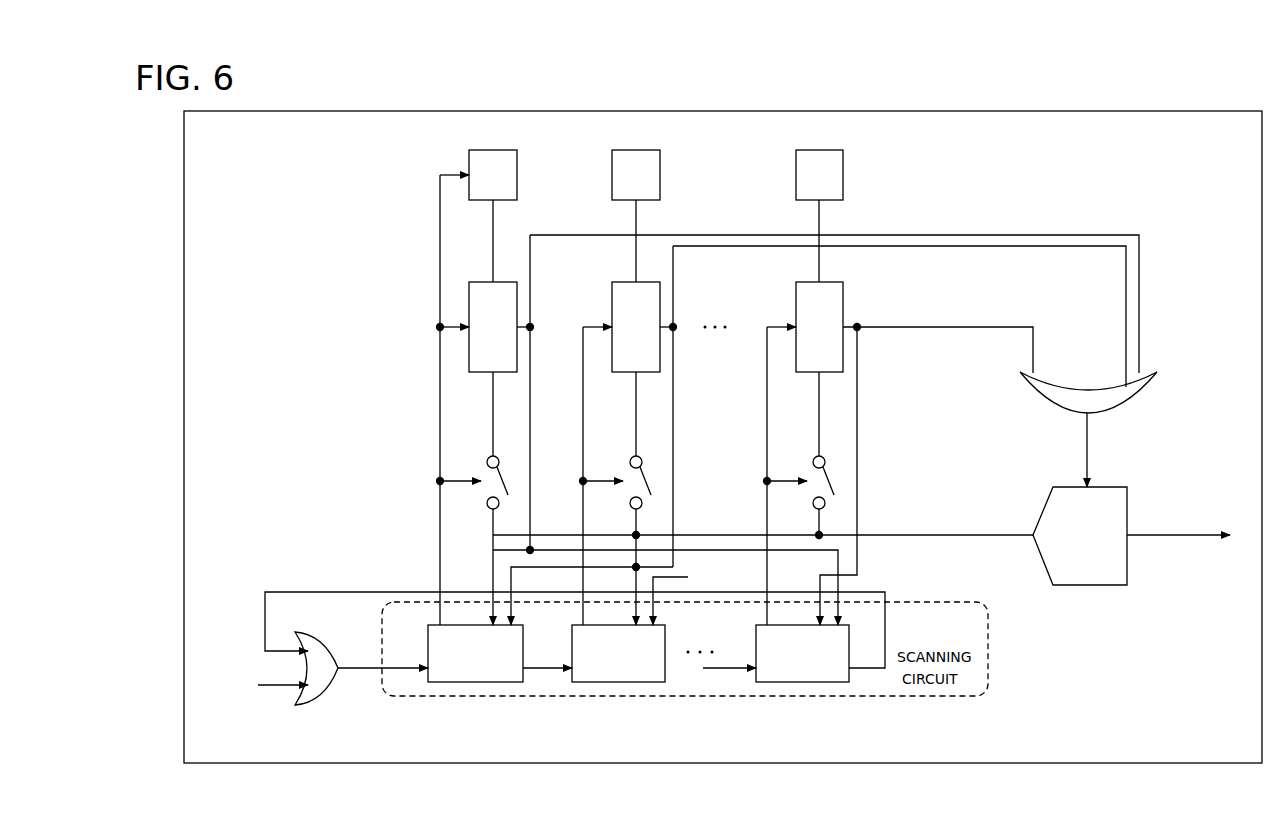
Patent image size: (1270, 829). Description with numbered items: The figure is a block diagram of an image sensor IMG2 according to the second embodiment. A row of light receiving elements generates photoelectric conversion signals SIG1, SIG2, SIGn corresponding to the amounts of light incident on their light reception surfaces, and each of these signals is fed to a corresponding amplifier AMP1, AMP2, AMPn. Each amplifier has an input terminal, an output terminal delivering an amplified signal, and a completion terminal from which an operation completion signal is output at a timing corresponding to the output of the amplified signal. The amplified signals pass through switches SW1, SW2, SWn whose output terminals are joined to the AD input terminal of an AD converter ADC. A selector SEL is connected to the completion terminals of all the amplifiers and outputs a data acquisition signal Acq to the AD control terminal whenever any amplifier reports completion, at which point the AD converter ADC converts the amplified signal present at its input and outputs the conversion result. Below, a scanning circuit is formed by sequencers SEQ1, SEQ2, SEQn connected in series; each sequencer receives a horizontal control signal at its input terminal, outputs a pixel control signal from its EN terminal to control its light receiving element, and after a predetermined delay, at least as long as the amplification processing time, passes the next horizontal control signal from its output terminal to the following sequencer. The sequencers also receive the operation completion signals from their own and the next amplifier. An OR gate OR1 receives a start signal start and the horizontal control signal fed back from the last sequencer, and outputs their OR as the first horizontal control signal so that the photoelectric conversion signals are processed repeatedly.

The image sensor IMG2 is at (1137, 111).
The first photoelectric conversion signal SIG1 is at (494, 213).
The second photoelectric conversion signal SIG2 is at (637, 213).
The n-th photoelectric conversion signal SIGn is at (820, 213).
The first amplifier AMP1 is at (485, 282).
The second amplifier AMP2 is at (627, 282).
The n-th amplifier AMPn is at (847, 295).
The first switch SW1 is at (487, 503).
The second switch SW2 is at (643, 502).
The n-th switch SWn is at (813, 502).
The selector SEL is at (1133, 398).
The data acquisition signal Acq is at (1088, 438).
The AD converter ADC is at (1043, 507).
The OR gate OR1 is at (333, 648).
The start signal start is at (255, 685).
The first sequencer SEQ1 is at (457, 683).
The second sequencer SEQ2 is at (613, 683).
The n-th sequencer SEQn is at (790, 683).